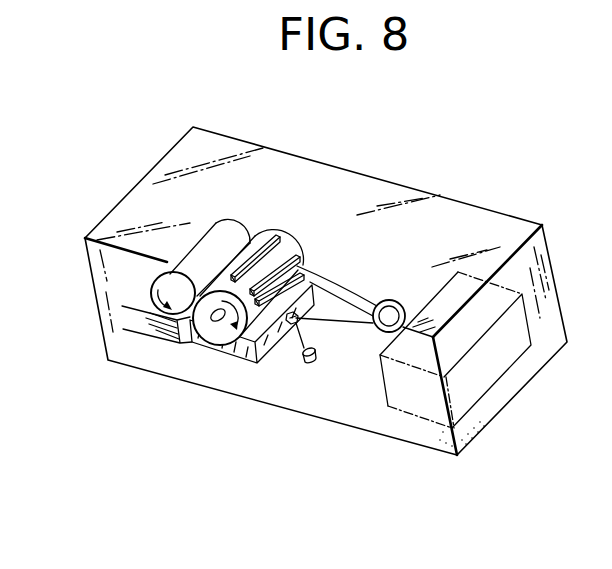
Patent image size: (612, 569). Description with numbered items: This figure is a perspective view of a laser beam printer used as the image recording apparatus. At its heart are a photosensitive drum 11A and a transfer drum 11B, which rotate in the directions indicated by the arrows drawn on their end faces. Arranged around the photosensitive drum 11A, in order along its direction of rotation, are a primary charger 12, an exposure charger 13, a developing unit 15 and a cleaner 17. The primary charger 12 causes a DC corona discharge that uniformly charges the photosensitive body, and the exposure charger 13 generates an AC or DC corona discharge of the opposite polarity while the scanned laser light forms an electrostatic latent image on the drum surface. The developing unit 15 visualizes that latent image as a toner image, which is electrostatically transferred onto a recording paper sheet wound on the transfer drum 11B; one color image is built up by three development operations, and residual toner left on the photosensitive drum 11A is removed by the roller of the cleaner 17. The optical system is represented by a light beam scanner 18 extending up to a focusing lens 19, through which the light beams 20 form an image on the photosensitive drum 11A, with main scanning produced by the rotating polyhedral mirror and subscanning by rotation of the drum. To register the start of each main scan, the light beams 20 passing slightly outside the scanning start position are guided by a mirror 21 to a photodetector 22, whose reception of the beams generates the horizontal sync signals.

The photosensitive drum 11A is at (219, 348).
The transfer drum 11B is at (152, 301).
The primary charger 12 is at (302, 260).
The exposure charger 13 is at (306, 262).
The developing unit 15 is at (199, 347).
The cleaner 17 is at (273, 238).
The light beam scanner 18 is at (403, 410).
The focusing lens 19 is at (384, 331).
The light beams 20 is at (340, 315).
The mirror 21 is at (295, 328).
The photodetector 22 is at (311, 366).